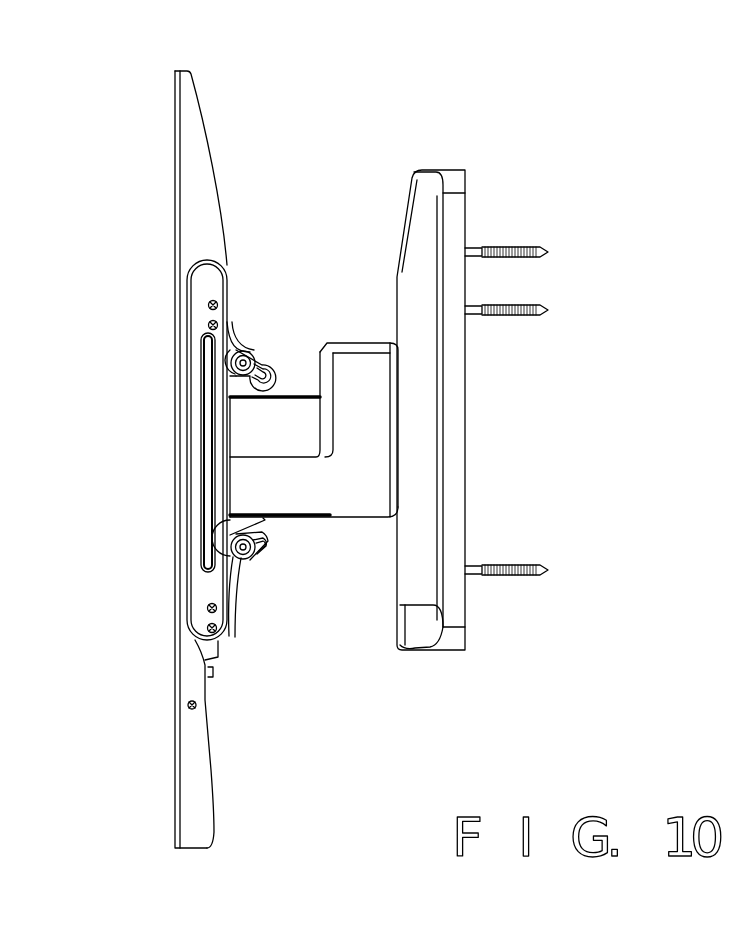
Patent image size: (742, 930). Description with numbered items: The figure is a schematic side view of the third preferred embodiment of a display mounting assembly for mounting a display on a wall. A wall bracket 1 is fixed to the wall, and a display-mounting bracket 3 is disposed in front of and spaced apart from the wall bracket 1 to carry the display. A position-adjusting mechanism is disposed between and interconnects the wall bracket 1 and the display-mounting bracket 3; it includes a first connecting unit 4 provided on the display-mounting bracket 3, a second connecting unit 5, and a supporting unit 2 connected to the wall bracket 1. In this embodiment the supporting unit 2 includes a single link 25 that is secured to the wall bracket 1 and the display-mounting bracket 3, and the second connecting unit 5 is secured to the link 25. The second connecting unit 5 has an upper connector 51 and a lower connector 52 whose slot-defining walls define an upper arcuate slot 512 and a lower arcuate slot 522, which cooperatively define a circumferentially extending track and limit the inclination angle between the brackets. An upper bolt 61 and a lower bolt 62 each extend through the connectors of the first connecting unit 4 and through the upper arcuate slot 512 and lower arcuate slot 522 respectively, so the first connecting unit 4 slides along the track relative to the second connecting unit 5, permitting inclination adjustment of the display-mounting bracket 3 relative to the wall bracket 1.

The wall bracket 1 is at (460, 142).
The supporting unit 2 is at (356, 328).
The display-mounting bracket 3 is at (162, 127).
The first connecting unit 4 is at (238, 306).
The second connecting unit 5 is at (300, 380).
The link 25 is at (345, 487).
The upper connector 51 is at (283, 352).
The upper arcuate slot 512 is at (261, 358).
The lower connector 52 is at (298, 550).
The lower arcuate slot 522 is at (276, 568).
The upper bolt 61 is at (240, 325).
The lower bolt 62 is at (245, 577).